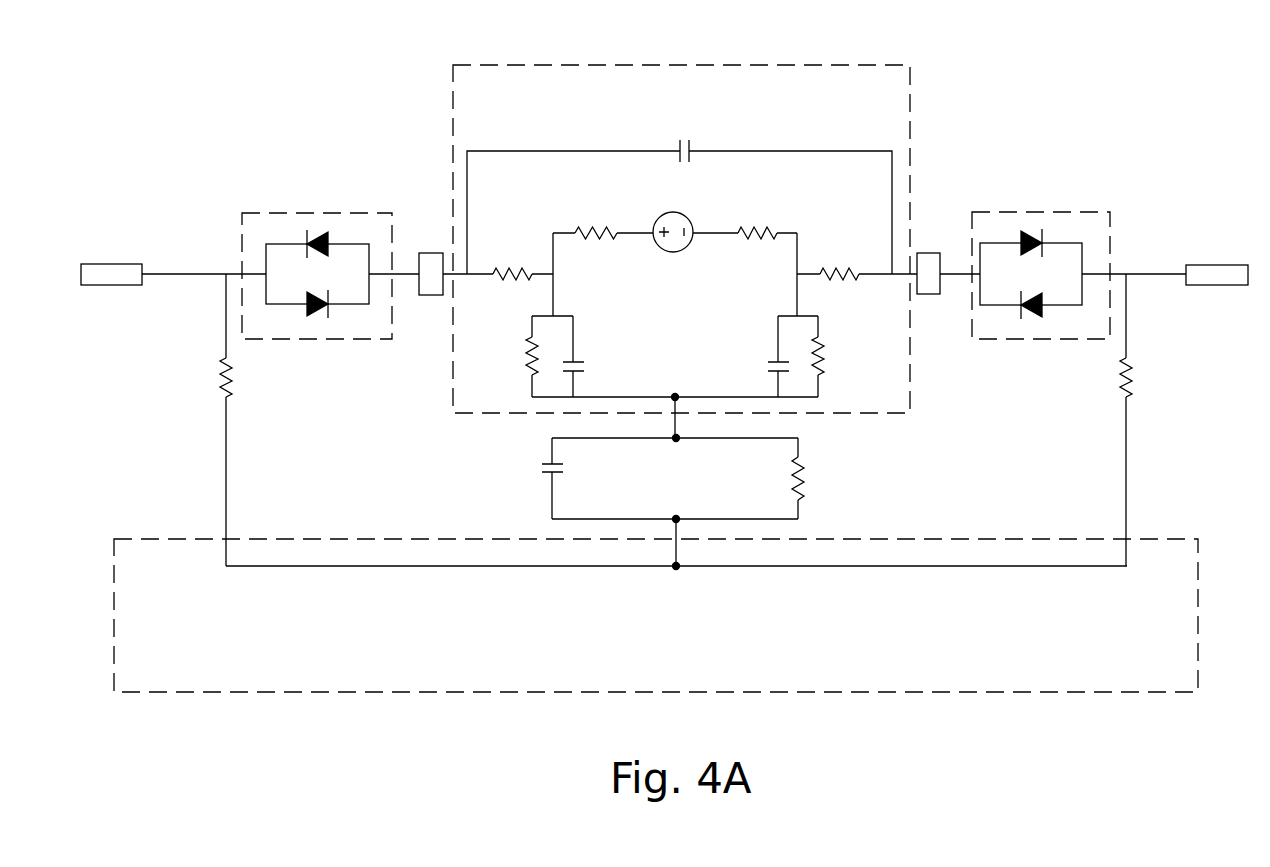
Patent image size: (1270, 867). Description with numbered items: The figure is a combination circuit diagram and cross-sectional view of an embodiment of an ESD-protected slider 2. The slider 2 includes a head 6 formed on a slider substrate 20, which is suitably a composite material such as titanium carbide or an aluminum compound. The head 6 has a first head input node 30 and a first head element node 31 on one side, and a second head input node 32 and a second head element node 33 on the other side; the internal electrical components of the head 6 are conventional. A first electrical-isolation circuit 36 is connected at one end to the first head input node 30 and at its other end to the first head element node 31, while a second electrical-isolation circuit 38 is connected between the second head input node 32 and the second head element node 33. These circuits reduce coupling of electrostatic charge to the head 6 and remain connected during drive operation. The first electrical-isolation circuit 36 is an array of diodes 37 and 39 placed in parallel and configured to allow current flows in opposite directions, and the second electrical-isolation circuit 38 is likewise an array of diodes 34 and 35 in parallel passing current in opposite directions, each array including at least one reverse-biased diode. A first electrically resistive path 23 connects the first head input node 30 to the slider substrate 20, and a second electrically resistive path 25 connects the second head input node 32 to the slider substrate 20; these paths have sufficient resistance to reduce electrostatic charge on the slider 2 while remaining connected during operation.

The ESD-protected slider 2 is at (169, 105).
The head 6 is at (725, 60).
The slider substrate 20 is at (115, 633).
The first electrically resistive path 23 is at (1145, 373).
The second electrically resistive path 25 is at (212, 373).
The first head input node 30 is at (1210, 263).
The first head element node 31 is at (930, 251).
The second head input node 32 is at (120, 260).
The second head element node 33 is at (432, 252).
The diode 34 is at (333, 235).
The diode 35 is at (332, 314).
The first electrical-isolation circuit 36 is at (1041, 256).
The diode 37 is at (1047, 236).
The second electrical-isolation circuit 38 is at (317, 256).
The diode 39 is at (1050, 313).